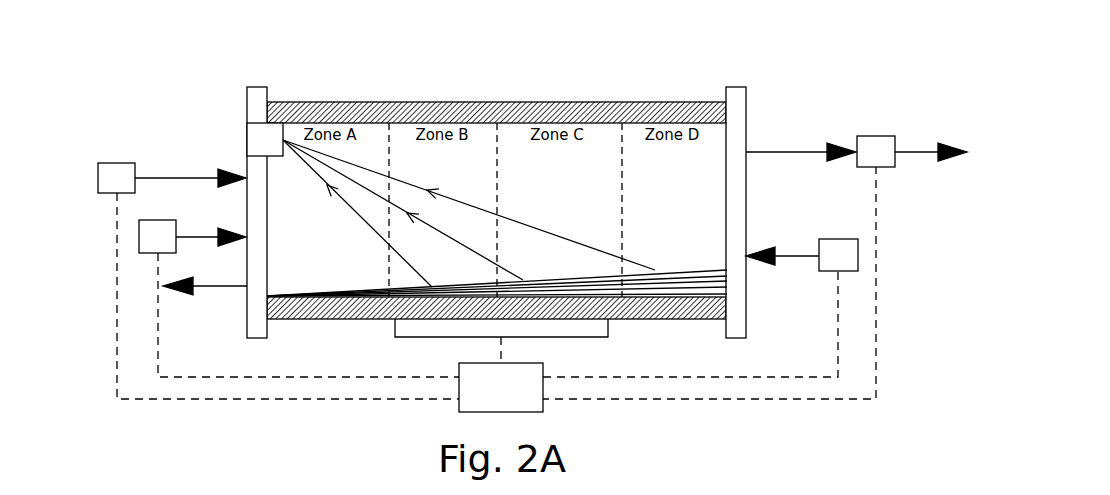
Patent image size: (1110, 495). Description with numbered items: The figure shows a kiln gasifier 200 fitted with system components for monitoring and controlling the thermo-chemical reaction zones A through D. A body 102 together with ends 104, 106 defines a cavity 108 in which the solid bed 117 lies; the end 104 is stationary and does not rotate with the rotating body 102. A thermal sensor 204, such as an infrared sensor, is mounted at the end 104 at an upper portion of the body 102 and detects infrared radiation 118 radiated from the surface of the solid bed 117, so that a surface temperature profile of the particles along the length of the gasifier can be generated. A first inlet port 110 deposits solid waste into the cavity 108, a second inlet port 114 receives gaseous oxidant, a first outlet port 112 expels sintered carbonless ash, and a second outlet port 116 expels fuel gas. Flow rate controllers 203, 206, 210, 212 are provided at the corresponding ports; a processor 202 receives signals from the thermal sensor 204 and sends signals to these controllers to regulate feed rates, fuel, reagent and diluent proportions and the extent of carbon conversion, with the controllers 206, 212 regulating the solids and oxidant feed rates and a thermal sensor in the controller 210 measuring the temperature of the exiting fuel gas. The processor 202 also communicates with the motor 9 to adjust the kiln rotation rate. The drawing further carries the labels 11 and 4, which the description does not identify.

The kiln gasifier 200 is at (613, 88).
The cavity 108 is at (505, 145).
The body 102 is at (362, 320).
The end 104 is at (255, 335).
The end 106 is at (737, 327).
The thermal sensor 204 is at (257, 143).
The flow rate controller 206 is at (122, 168).
The feed inlet 11 is at (197, 177).
The second inlet port 114 is at (198, 233).
The flow rate controller 203 is at (168, 243).
The first outlet port 112 is at (232, 287).
The infrared radiation 118 is at (373, 177).
The solid bed 117 is at (610, 280).
The second outlet port 116 is at (787, 152).
The flow rate controller 210 is at (877, 145).
The product 4 is at (917, 155).
The flow rate controller 212 is at (830, 247).
The first inlet port 110 is at (783, 257).
The motor 9 is at (422, 332).
The processor 202 is at (515, 383).